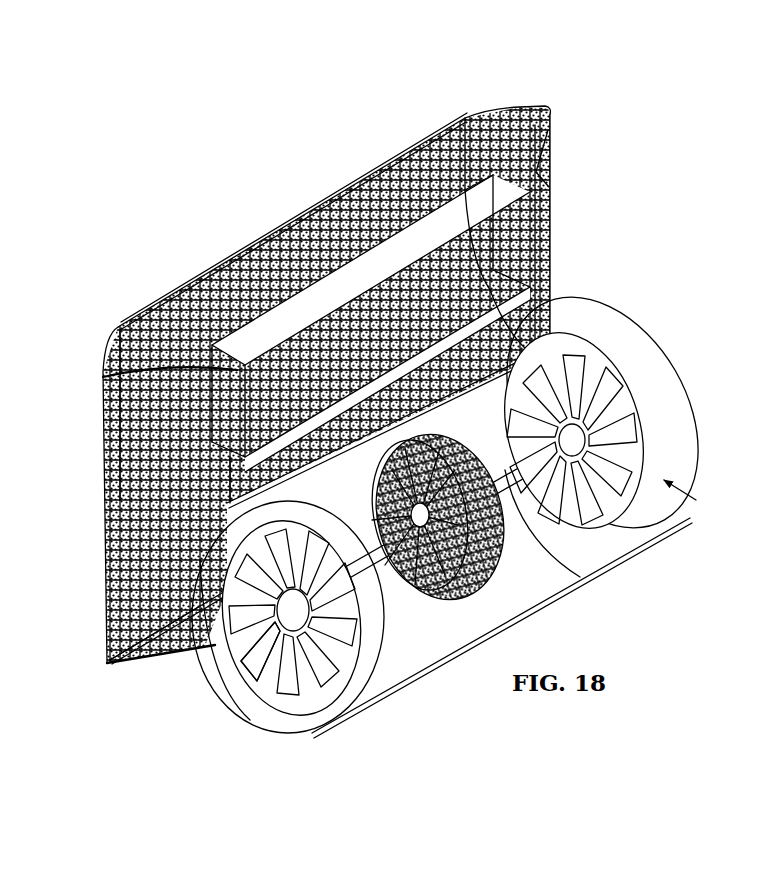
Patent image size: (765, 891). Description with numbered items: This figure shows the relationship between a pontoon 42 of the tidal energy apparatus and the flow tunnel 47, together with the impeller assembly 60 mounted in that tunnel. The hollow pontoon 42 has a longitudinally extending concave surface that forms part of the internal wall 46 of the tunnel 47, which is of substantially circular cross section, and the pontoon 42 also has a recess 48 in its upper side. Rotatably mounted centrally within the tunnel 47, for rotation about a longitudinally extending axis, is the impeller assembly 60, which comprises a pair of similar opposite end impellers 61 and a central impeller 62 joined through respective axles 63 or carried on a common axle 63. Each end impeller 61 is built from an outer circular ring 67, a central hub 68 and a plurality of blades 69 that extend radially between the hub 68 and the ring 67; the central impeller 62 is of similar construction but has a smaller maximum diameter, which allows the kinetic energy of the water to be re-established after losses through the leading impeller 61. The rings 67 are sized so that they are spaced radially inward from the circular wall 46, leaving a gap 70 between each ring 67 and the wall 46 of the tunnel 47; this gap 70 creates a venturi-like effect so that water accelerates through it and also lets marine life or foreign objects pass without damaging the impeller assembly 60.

The pontoon 42 is at (92, 518).
The recess 48 is at (297, 292).
The internal wall 46 is at (318, 716).
The tunnel 47 is at (680, 378).
The impeller assembly 60 is at (392, 578).
The end impeller 61 is at (696, 500).
The central impeller 62 is at (500, 580).
The axle 63 is at (449, 586).
The outer circular ring 67 is at (262, 658).
The central hub 68 is at (282, 688).
The blades 69 is at (268, 658).
The gap 70 is at (212, 568).